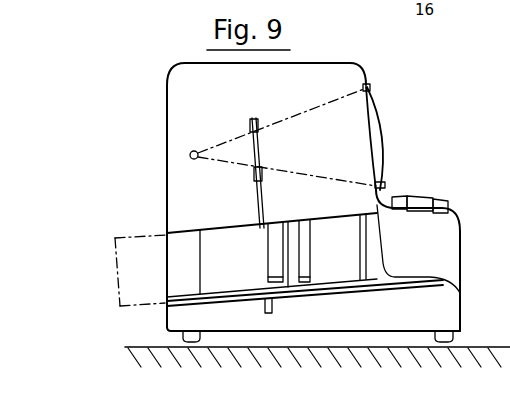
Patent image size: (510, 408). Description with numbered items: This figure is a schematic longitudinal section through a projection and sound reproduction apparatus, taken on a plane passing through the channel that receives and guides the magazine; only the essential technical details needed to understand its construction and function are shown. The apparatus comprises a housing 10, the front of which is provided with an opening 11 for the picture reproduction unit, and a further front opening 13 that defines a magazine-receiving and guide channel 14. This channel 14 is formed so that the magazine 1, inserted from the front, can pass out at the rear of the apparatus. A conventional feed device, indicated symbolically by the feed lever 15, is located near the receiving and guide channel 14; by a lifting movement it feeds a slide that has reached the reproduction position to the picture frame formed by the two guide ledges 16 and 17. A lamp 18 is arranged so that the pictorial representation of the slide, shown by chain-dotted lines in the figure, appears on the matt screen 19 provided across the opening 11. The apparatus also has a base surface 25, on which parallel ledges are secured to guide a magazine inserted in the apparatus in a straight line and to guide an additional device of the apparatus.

The magazine 1 is at (231, 248).
The housing 10 is at (358, 66).
The opening 11 is at (370, 87).
The opening 13 is at (387, 268).
The magazine-receiving and guide channel 14 is at (187, 258).
The feed lever 15 is at (268, 313).
The guide ledge 16 is at (252, 155).
The guide ledge 17 is at (251, 119).
The lamp 18 is at (191, 152).
The matt screen 19 is at (378, 144).
The base surface 25 is at (358, 288).